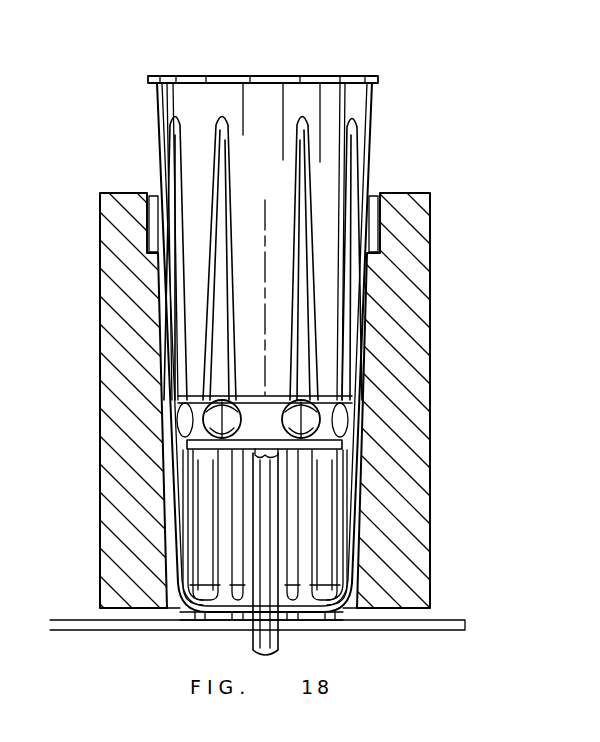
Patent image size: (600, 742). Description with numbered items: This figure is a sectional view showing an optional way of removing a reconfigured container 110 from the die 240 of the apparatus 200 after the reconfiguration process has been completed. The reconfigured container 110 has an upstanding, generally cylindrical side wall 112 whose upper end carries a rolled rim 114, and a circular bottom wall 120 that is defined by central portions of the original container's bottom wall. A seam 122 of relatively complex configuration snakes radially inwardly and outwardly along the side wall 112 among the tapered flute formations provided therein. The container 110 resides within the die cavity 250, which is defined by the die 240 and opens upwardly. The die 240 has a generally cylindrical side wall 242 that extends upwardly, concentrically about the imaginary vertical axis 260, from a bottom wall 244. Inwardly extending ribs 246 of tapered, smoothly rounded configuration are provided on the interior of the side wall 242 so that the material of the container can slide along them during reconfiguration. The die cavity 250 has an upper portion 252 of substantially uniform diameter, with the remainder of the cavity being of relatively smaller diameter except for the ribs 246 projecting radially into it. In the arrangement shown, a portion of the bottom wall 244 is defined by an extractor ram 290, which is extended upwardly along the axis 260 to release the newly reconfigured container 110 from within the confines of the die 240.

The reconfigured container 110 is at (375, 70).
The side wall 112 is at (370, 108).
The rolled rim 114 is at (300, 76).
The bottom wall 120 is at (246, 424).
The seam 122 is at (250, 396).
The apparatus 200 is at (437, 152).
The die 240 is at (438, 210).
The side wall of die 242 is at (430, 320).
The bottom wall of die 244 is at (465, 620).
The ribs 246 is at (303, 502).
The die cavity 250 is at (380, 195).
The upper portion of die cavity 252 is at (152, 215).
The axis 260 is at (278, 187).
The extractor ram 290 is at (272, 551).